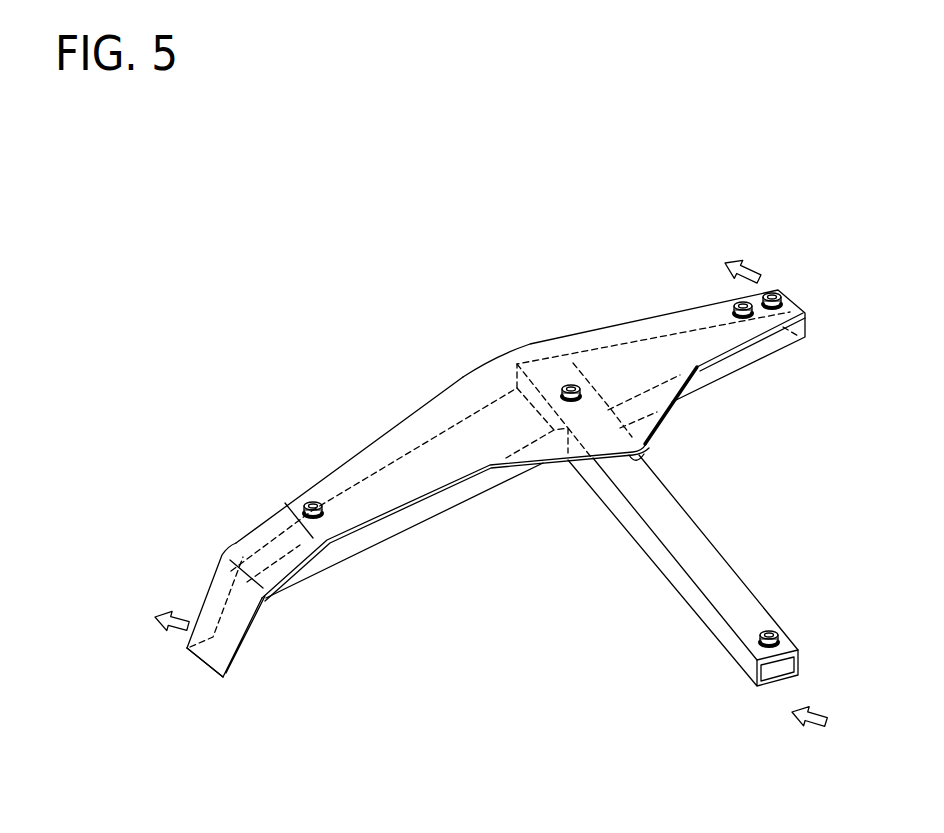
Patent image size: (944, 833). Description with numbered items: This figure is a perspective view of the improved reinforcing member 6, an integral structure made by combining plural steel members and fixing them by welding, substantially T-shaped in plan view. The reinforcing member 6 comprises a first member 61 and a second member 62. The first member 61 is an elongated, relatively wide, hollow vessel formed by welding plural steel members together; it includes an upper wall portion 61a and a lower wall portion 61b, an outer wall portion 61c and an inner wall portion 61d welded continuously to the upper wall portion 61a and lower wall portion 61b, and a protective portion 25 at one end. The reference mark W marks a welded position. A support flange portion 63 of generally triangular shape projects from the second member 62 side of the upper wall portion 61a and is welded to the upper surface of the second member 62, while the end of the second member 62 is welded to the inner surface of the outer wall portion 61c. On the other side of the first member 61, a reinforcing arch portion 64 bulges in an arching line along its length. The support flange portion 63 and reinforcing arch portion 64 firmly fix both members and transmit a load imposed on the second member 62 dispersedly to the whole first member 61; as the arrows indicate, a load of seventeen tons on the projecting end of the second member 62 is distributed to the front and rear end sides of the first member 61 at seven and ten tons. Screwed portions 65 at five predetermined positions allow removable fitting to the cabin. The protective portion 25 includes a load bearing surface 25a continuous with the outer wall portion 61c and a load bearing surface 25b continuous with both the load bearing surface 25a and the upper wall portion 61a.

The reinforcing member 6 is at (350, 263).
The protective portion 25 is at (260, 650).
The load bearing surface 25a is at (222, 597).
The load bearing surface 25b is at (210, 654).
The first member 61 is at (247, 518).
The upper wall portion 61a is at (403, 430).
The lower wall portion 61b is at (330, 567).
The outer wall portion 61c is at (347, 460).
The inner wall portion 61d is at (393, 527).
The second member 62 is at (718, 530).
The support flange portion 63 is at (655, 424).
The reinforcing arch portion 64 is at (483, 387).
The screwed portions 65 is at (310, 505).
The welded position W is at (648, 460).